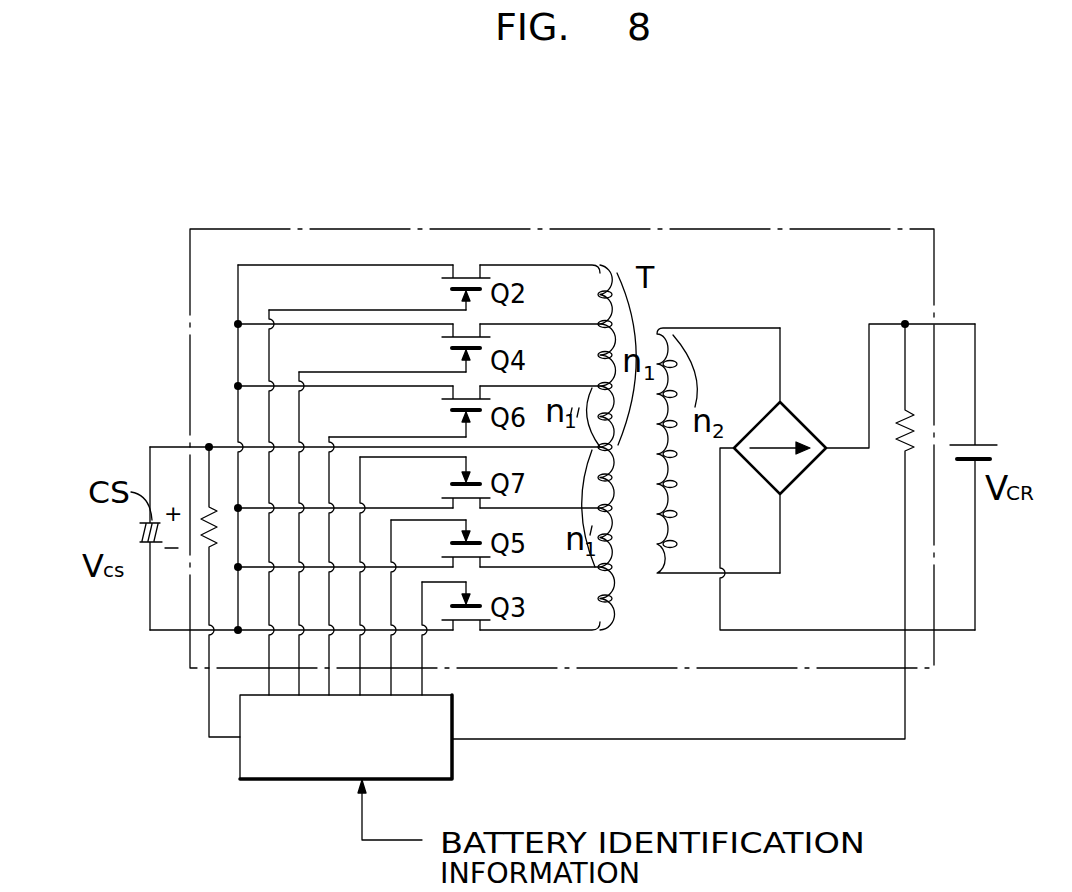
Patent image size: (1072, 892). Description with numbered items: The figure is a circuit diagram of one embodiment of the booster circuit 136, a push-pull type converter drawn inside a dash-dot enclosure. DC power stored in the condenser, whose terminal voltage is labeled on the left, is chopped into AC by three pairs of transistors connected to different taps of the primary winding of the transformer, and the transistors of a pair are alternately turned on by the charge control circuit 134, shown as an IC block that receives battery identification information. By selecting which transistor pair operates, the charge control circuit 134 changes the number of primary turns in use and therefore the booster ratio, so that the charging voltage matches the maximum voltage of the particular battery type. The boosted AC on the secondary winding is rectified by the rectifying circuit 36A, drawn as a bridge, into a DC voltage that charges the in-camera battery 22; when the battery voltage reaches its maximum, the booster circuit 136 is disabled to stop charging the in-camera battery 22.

The booster circuit 136 is at (720, 229).
The charge control circuit 134 is at (315, 780).
The in-camera battery 22 is at (977, 444).
The rectifying circuit 36A is at (802, 424).